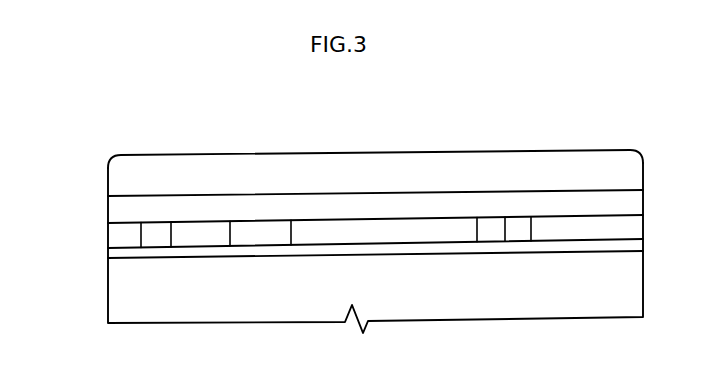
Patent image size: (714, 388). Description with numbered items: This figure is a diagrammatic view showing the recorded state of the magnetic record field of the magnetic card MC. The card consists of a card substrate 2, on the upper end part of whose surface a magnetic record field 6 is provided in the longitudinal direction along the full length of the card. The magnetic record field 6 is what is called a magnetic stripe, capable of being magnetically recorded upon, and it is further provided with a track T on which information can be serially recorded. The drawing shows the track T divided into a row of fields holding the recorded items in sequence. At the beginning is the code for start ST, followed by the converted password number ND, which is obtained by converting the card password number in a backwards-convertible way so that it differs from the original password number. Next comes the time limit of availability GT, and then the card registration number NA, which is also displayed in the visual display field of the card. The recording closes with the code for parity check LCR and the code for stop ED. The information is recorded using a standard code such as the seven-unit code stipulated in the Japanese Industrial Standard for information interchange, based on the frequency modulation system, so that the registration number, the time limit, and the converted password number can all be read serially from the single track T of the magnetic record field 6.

The magnetic card MC is at (154, 149).
The card substrate 2 is at (115, 179).
The magnetic record field 6 is at (283, 200).
The track T is at (117, 222).
The code for start ST is at (157, 265).
The converted password number ND is at (204, 265).
The time limit of availability GT is at (272, 265).
The card registration number NA is at (397, 260).
The code for parity check LCR is at (492, 260).
The code for stop ED is at (523, 260).